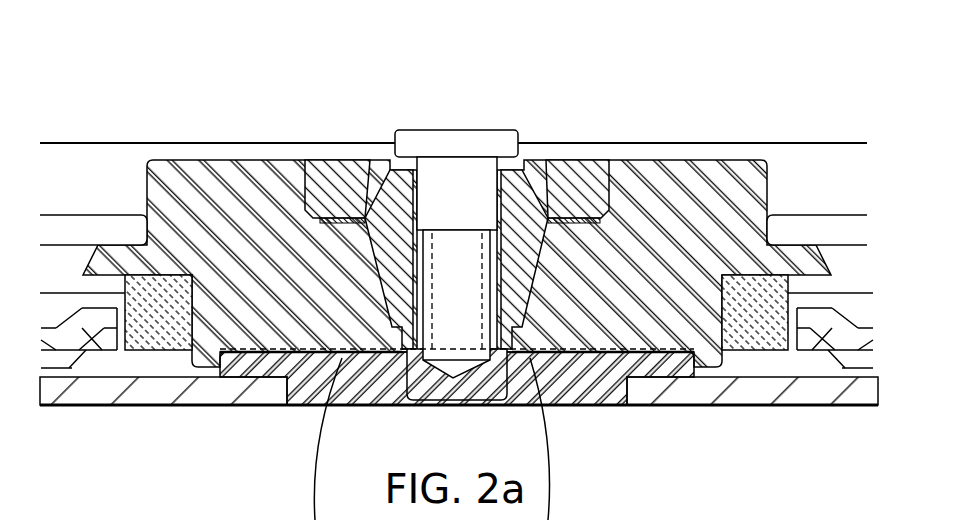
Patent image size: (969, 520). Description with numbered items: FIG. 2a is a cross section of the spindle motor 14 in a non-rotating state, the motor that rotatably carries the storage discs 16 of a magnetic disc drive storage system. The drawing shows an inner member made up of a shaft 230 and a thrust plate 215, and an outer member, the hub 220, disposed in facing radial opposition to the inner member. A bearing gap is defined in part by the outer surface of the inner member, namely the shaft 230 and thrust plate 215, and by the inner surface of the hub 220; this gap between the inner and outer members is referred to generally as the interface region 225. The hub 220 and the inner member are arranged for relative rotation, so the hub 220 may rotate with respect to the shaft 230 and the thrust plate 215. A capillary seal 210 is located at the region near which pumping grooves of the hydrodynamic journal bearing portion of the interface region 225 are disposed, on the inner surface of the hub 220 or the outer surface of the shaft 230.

The spindle motor 14 is at (203, 64).
The storage discs 16 is at (78, 222).
The capillary seal 210 is at (377, 182).
The thrust plate 215 is at (290, 392).
The hub 220 is at (703, 345).
The interface region 225 is at (627, 367).
The shaft 230 is at (406, 318).